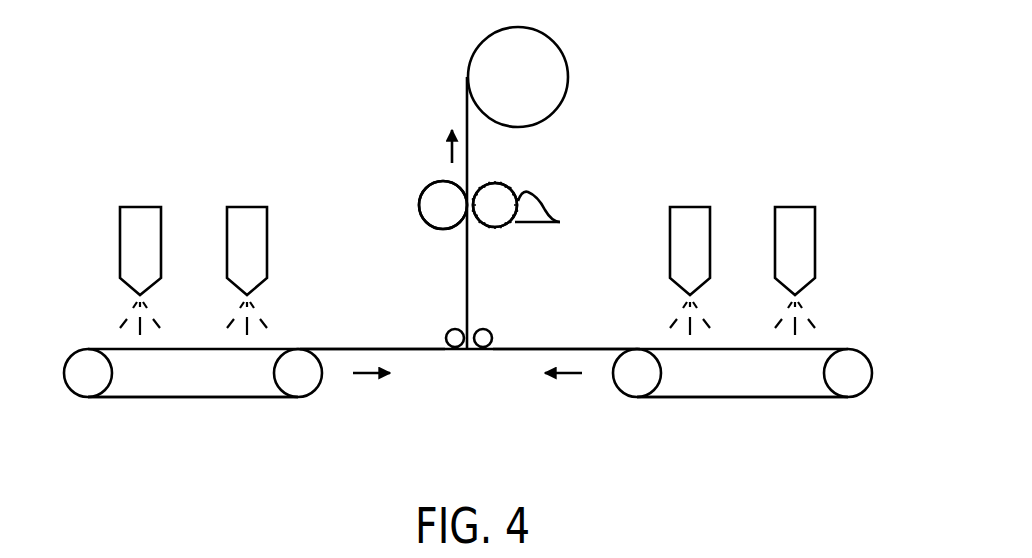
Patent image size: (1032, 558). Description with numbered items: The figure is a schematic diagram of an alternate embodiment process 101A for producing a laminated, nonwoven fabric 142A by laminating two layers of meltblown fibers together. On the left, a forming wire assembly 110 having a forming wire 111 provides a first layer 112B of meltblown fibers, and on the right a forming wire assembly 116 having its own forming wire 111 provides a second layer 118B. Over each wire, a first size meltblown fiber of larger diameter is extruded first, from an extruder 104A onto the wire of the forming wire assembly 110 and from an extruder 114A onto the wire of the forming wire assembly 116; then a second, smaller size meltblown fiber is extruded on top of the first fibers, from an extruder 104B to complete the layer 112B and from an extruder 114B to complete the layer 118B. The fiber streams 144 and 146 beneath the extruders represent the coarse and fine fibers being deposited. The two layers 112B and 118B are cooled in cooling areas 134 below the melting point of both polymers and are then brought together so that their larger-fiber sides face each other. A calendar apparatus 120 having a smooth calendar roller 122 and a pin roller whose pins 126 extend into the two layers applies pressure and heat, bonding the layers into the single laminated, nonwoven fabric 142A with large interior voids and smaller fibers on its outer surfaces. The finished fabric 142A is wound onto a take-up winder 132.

The process 101A is at (740, 116).
The extruder 104A is at (103, 232).
The extruder 104B is at (286, 235).
The forming wire assembly 110 is at (175, 408).
The forming wire 111 is at (193, 398).
The first layer 112B is at (344, 348).
The extruder 114A is at (832, 235).
The extruder 114B is at (653, 233).
The forming wire assembly 116 is at (730, 410).
The second layer 118B is at (572, 348).
The calendar apparatus 120 is at (402, 213).
The smooth calendar roller 122 is at (445, 229).
The pins 126 is at (537, 211).
The take-up winder 132 is at (483, 40).
The cooling areas 134 is at (370, 333).
The laminated, nonwoven fabric 142A is at (467, 160).
The first material spray 144 is at (104, 315).
The second material spray 146 is at (207, 315).